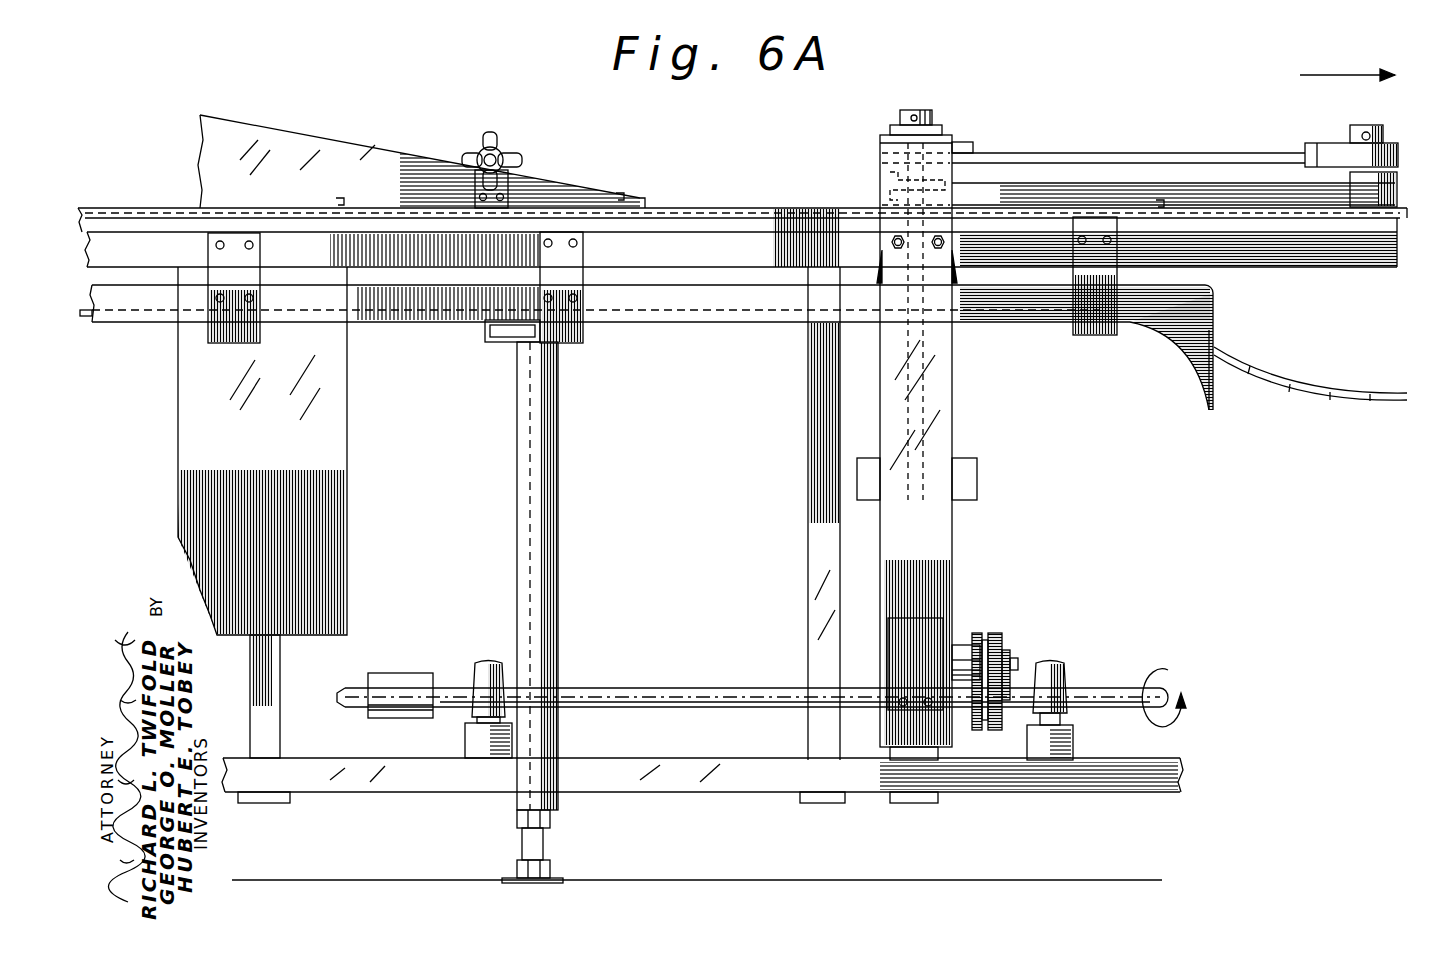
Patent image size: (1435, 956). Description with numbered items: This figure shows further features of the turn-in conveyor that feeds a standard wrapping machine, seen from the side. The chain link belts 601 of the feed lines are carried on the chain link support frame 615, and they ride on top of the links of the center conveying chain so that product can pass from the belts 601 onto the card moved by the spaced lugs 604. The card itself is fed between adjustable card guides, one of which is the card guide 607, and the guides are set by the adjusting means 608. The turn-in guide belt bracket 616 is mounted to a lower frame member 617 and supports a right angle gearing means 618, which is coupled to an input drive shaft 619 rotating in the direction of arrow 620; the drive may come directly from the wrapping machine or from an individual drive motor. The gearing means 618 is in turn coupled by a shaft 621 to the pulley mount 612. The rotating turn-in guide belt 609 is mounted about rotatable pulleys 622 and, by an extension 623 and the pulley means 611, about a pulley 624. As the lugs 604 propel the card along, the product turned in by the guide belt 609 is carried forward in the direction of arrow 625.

The chain link belts 601 is at (1293, 386).
The spaced lugs 604 is at (338, 198).
The adjustable card guide 607 is at (265, 140).
The adjusting means 608 is at (478, 145).
The rotating turn-in guide belt 609 is at (1207, 190).
The pulley means 611 is at (1338, 148).
The pulley mount 612 is at (887, 138).
The chain link support frame 615 is at (1230, 252).
The turn-in guide belt bracket 616 is at (945, 373).
The lower frame member 617 is at (423, 787).
The right angle gearing means 618 is at (973, 647).
The input drive shaft 619 is at (1092, 690).
The arrow 620 is at (1186, 708).
The shaft 621 is at (917, 528).
The rotatable pulleys 622 is at (887, 173).
The extension 623 is at (1143, 160).
The pulley 624 is at (1347, 173).
The arrow 625 is at (1352, 59).